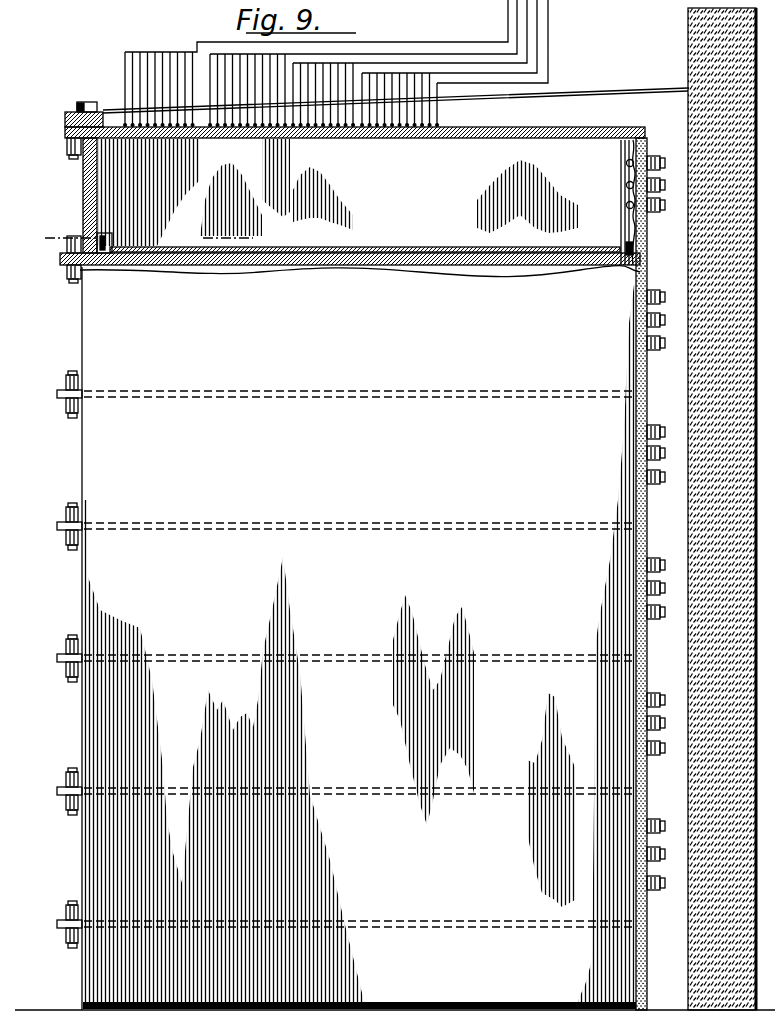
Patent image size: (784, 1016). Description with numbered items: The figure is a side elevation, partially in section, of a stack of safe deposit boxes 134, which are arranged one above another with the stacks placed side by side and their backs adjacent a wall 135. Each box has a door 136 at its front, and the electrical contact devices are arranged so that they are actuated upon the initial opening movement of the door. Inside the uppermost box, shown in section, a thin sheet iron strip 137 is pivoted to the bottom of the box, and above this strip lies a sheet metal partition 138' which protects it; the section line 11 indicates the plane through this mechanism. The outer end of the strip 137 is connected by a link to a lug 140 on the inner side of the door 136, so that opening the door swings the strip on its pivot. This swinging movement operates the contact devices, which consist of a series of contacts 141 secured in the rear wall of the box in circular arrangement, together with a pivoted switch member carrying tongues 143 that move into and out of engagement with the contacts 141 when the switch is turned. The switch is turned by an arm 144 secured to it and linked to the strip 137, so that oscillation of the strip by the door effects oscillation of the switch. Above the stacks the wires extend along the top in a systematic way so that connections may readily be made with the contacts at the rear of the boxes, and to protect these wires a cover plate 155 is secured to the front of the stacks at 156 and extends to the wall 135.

The wall 135 is at (720, 42).
The cover plate 155 is at (610, 89).
The tongues 143 is at (628, 127).
The securing point of cover plate 156 is at (82, 101).
The door 136 is at (83, 185).
The sheet metal partition 138' is at (359, 195).
The lug 140 is at (112, 238).
The section line 11 is at (258, 238).
The thin sheet iron strip 137 is at (133, 265).
The arm 144 is at (628, 228).
The contacts 141 is at (648, 155).
The safe deposit boxes 134 is at (360, 644).